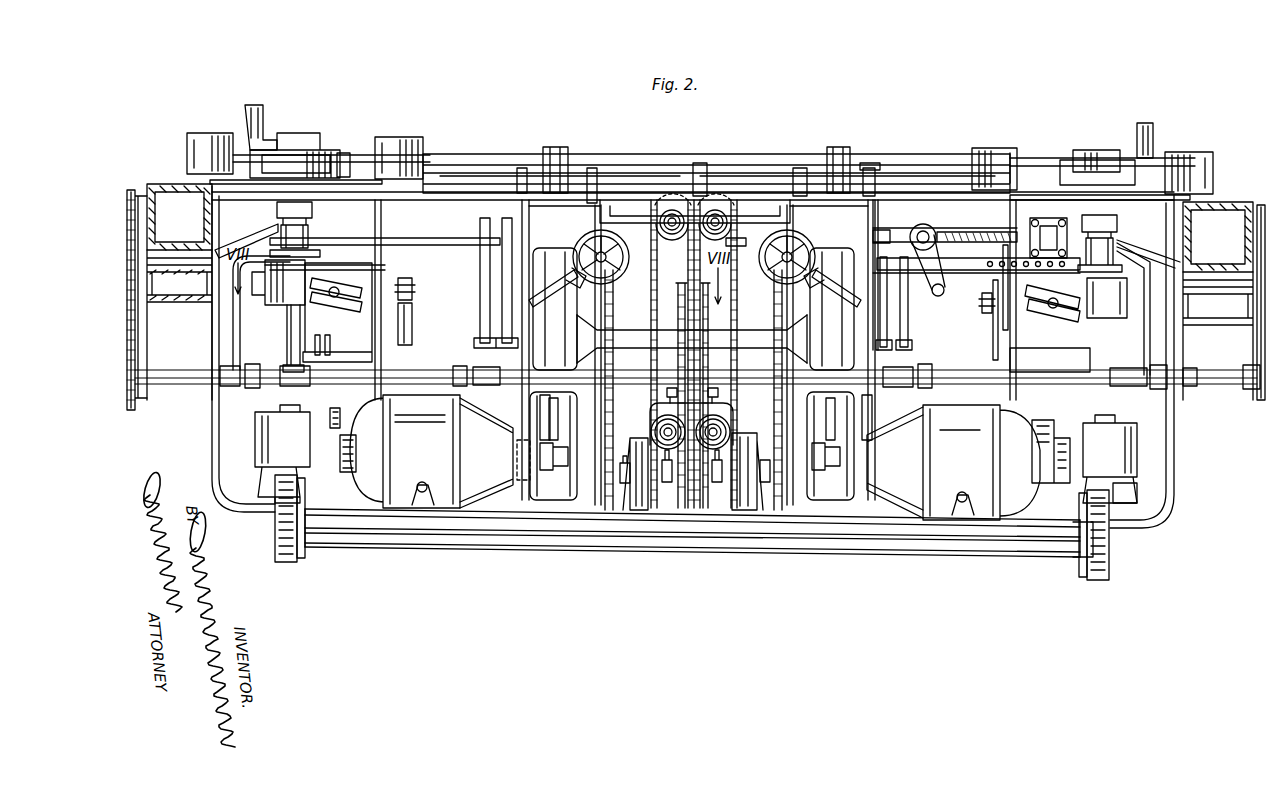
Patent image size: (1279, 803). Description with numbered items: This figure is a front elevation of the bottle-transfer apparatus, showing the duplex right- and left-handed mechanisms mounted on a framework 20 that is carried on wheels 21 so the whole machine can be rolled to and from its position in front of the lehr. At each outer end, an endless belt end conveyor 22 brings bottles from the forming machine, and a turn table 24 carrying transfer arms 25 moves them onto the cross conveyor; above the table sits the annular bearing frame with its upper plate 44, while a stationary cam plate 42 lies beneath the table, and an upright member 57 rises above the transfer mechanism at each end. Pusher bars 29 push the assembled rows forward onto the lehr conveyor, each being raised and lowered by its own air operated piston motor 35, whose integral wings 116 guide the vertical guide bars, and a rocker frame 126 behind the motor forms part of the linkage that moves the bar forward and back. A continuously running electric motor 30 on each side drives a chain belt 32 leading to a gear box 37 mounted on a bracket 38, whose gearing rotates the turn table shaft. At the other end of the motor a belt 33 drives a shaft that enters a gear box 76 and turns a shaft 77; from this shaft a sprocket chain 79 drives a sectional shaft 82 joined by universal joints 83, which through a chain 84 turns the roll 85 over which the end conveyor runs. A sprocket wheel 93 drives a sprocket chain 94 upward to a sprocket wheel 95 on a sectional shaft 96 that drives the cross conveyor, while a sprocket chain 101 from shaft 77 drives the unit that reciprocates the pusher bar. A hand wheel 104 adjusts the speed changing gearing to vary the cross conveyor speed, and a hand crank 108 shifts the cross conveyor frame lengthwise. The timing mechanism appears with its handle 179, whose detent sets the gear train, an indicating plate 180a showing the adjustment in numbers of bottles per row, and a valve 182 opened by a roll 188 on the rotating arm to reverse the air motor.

The framework 20 is at (560, 537).
The wheels 21 is at (290, 565).
The endless belt conveyor 22 is at (198, 186).
The turn table 24 is at (364, 200).
The transfer arms 25 is at (210, 140).
The pusher bar 29 is at (636, 158).
The electric motor 30 is at (695, 457).
The chain belt 32 is at (340, 432).
The belt 33 is at (556, 470).
The air operated piston motor 35 is at (800, 355).
The gear box 37 is at (259, 426).
The bracket 38 is at (1130, 498).
The stationary cam plate 42 is at (314, 208).
The upper plate 44 is at (323, 146).
The post 57 is at (256, 118).
The gear box 76 is at (640, 450).
The shaft 77 is at (635, 469).
The sprocket chain 79 is at (609, 400).
The shaft 82 is at (422, 372).
The universal joints 83 is at (245, 370).
The chain 84 is at (145, 343).
The roll 85 is at (137, 192).
The sprocket wheel 93 is at (660, 418).
The sprocket chain 94 is at (650, 318).
The sprocket wheel 95 is at (735, 247).
The shaft 96 is at (730, 222).
The sprocket chain 101 is at (732, 333).
The hand wheel 104 is at (584, 240).
The hand crank 108 is at (930, 298).
The wings 116 is at (838, 403).
The rocker frame 126 is at (575, 353).
The handle 179 is at (346, 298).
The indicating plate 180a is at (322, 272).
The valve 182 is at (403, 340).
The roll 188 is at (400, 323).